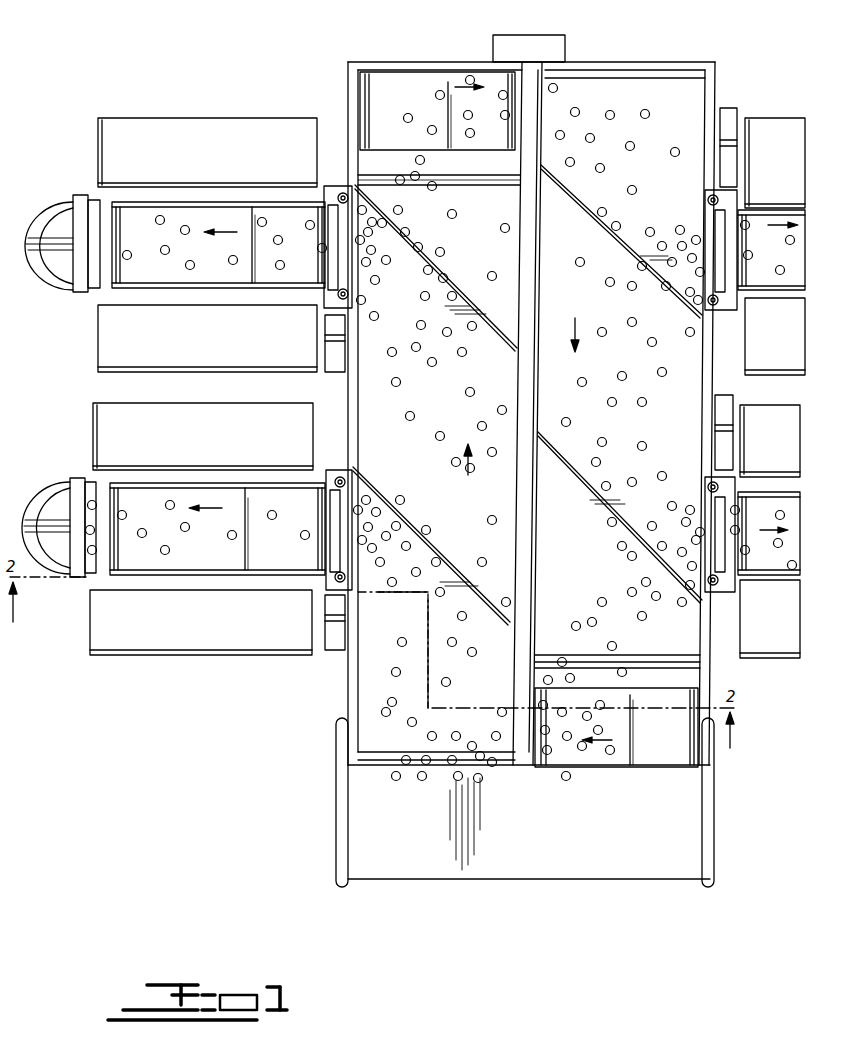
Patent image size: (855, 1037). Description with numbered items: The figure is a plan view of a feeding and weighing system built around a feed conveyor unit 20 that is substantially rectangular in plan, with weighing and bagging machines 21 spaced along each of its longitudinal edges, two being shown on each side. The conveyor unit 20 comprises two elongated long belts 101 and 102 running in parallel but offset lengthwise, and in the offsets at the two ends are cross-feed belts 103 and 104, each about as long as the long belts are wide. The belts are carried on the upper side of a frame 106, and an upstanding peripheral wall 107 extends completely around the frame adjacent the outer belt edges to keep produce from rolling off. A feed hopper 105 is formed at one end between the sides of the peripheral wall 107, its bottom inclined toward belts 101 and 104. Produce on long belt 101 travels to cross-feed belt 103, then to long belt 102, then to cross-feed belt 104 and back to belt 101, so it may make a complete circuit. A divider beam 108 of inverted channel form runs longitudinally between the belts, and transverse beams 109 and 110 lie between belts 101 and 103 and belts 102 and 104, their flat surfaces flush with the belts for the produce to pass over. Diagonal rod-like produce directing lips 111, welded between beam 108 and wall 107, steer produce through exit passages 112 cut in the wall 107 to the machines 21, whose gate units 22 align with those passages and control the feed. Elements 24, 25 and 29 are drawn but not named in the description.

The feed conveyor unit 20 is at (372, 42).
The weighing and bagging machine 21 is at (70, 144).
The gate unit 22 is at (326, 272).
The conveyor 24 is at (210, 205).
The dome end cap 25 is at (46, 204).
The end cap mounting block 29 is at (56, 282).
The long belt 101 is at (358, 706).
The long belt 102 is at (655, 95).
The cross-feed belt 103 is at (418, 75).
The cross-feed belt 104 is at (665, 755).
The feed hopper 105 is at (612, 862).
The frame 106 is at (347, 690).
The peripheral wall 107 is at (348, 88).
The divider beam 108 is at (527, 760).
The transverse beam 109 is at (360, 157).
The transverse beam 110 is at (588, 672).
The produce directing lip 111 is at (455, 285).
The exit passage 112 is at (364, 494).